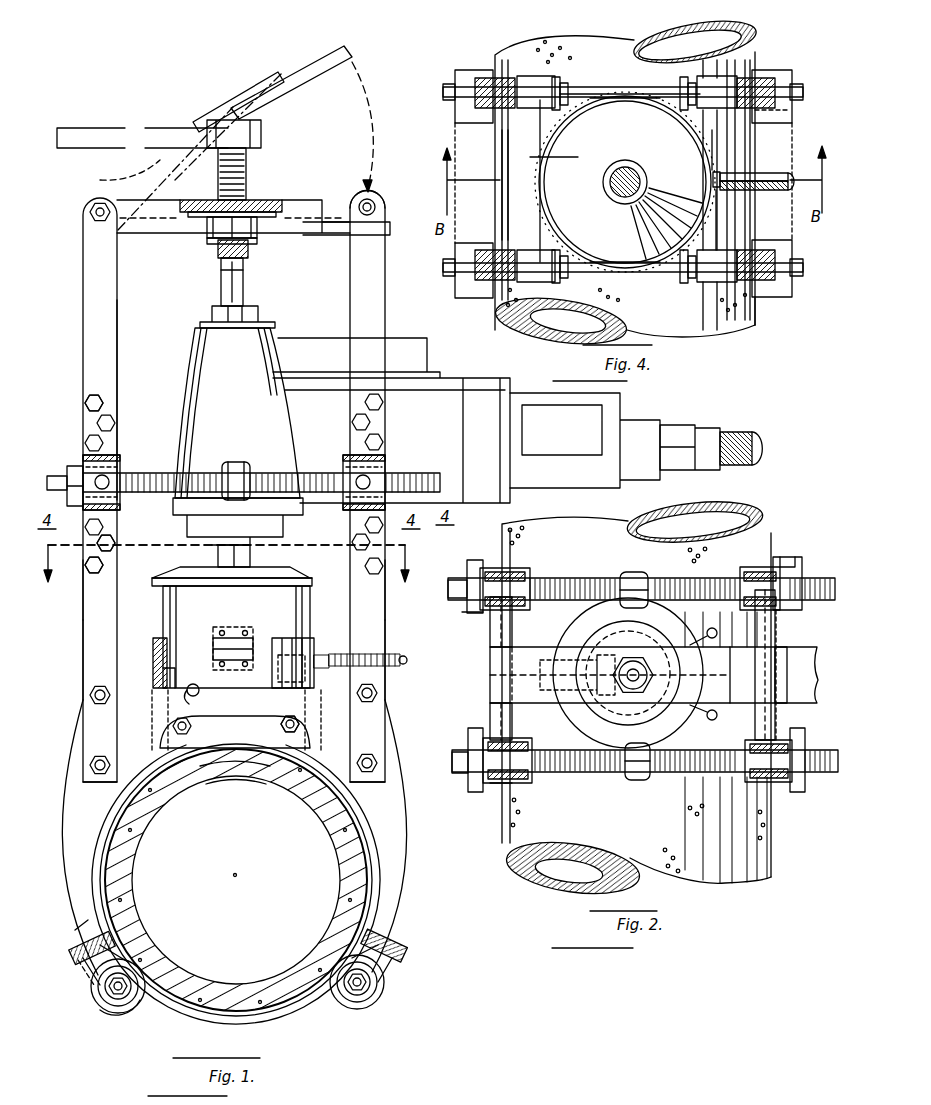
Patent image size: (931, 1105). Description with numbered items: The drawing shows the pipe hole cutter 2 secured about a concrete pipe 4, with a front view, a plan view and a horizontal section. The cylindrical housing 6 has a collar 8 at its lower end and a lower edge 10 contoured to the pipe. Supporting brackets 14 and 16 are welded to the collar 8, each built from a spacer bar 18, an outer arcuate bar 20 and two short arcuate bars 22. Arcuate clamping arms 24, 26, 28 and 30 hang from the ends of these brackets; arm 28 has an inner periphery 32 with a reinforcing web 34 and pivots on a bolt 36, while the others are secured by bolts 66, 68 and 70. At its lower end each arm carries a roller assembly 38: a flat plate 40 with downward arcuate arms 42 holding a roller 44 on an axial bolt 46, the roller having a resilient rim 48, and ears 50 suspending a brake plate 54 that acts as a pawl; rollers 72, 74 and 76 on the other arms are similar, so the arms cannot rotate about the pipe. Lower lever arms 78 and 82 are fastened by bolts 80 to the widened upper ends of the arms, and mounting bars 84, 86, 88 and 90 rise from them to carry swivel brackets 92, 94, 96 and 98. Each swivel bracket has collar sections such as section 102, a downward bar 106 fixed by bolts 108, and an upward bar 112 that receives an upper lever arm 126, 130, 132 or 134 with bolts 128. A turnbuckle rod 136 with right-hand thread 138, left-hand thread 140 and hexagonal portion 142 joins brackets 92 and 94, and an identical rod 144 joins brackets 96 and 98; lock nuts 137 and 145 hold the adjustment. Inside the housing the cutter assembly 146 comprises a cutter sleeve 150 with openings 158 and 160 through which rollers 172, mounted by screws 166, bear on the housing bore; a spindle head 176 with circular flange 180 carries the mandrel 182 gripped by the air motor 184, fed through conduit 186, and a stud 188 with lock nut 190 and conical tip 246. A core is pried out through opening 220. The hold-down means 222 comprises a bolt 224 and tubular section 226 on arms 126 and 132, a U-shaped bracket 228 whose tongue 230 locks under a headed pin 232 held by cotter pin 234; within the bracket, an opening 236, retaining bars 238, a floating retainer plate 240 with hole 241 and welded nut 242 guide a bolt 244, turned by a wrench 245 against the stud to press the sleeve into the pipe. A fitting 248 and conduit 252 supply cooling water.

In FIG. 1, the pipe hole cutter 2 is at (68, 314).
In FIG. 4, the pipe hole cutter 2 is at (450, 77).
In FIG. 2, the pipe hole cutter 2 is at (808, 554).
In FIG. 1, the pipe 4 is at (289, 1000).
In FIG. 4, the pipe 4 is at (751, 60).
In FIG. 2, the pipe 4 is at (773, 850).
In FIG. 1, the cylindrical housing 6 is at (153, 646).
In FIG. 4, the cylindrical housing 6 is at (540, 256).
In FIG. 1, the collar 8 is at (318, 714).
In FIG. 4, the collar 8 is at (540, 194).
In FIG. 1, the lower edge 10 is at (311, 749).
In FIG. 4, the supporting bracket 14 is at (592, 82).
In FIG. 4, the supporting bracket 16 is at (643, 284).
In FIG. 1, the spacer bar 18 is at (250, 766).
In FIG. 4, the spacer bar 18 is at (642, 92).
In FIG. 1, the arcuate bar 20 is at (236, 764).
In FIG. 4, the arcuate bar 20 is at (608, 94).
In FIG. 4, the short arcuate bars 22 is at (668, 113).
In FIG. 4, the arcuate clamping arm 24 is at (522, 85).
In FIG. 4, the arcuate clamping arm 26 is at (715, 111).
In FIG. 1, the arcuate clamping arm 28 is at (63, 782).
In FIG. 4, the arcuate clamping arm 28 is at (512, 258).
In FIG. 1, the arcuate clamping arm 30 is at (400, 758).
In FIG. 4, the arcuate clamping arm 30 is at (716, 248).
In FIG. 1, the arcuate inner periphery 32 is at (95, 846).
In FIG. 1, the arcuate reinforcing web 34 is at (95, 887).
In FIG. 1, the bolt 36 is at (166, 724).
In FIG. 4, the bolt 36 is at (561, 282).
In FIG. 1, the roller assembly 38 is at (110, 1022).
In FIG. 1, the flat plate 40 is at (80, 936).
In FIG. 1, the arcuate arms 42 is at (108, 986).
In FIG. 1, the roller 44 is at (142, 998).
In FIG. 4, the roller 44 is at (472, 245).
In FIG. 1, the axial bolt 46 is at (114, 994).
In FIG. 1, the rim 48 is at (125, 1014).
In FIG. 1, the ears 50 is at (76, 950).
In FIG. 1, the brake plate 54 is at (86, 972).
In FIG. 4, the bolt 66 is at (560, 80).
In FIG. 4, the bolt 68 is at (684, 84).
In FIG. 1, the bolt 70 is at (301, 726).
In FIG. 4, the bolt 70 is at (688, 291).
In FIG. 4, the roller 72 is at (466, 70).
In FIG. 4, the roller 74 is at (790, 68).
In FIG. 1, the roller 76 is at (384, 992).
In FIG. 4, the roller 76 is at (780, 297).
In FIG. 1, the lower lever arms 78 is at (83, 627).
In FIG. 1, the bolts 80 is at (101, 698).
In FIG. 1, the lower lever arms 82 is at (386, 624).
In FIG. 1, the mounting bar 84 is at (83, 586).
In FIG. 4, the mounting bar 84 is at (486, 292).
In FIG. 1, the mounting bar 86 is at (385, 590).
In FIG. 4, the mounting bar 86 is at (758, 300).
In FIG. 4, the mounting bar 88 is at (509, 122).
In FIG. 4, the mounting bar 90 is at (762, 120).
In FIG. 1, the swivel bracket 92 is at (78, 463).
In FIG. 2, the swivel bracket 92 is at (522, 784).
In FIG. 1, the swivel bracket 94 is at (389, 464).
In FIG. 2, the swivel bracket 94 is at (752, 785).
In FIG. 2, the swivel bracket 96 is at (520, 570).
In FIG. 2, the swivel bracket 98 is at (745, 570).
In FIG. 1, the semi-cylindrical collar section 102 is at (118, 512).
In FIG. 1, the downwardly directed bar 106 is at (118, 560).
In FIG. 1, the bolts 108 is at (107, 572).
In FIG. 1, the upwardly projecting bar 112 is at (118, 412).
In FIG. 1, the upper lever arm 126 is at (118, 292).
In FIG. 2, the upper lever arm 126 is at (512, 745).
In FIG. 1, the bolts 128 is at (97, 394).
In FIG. 1, the upper lever arm 130 is at (386, 290).
In FIG. 2, the upper lever arm 130 is at (755, 770).
In FIG. 2, the upper lever arm 132 is at (470, 566).
In FIG. 2, the upper lever arm 134 is at (782, 560).
In FIG. 1, the turnbuckle rod 136 is at (253, 470).
In FIG. 2, the turnbuckle rod 136 is at (617, 780).
In FIG. 1, the lock nut 137 is at (66, 506).
In FIG. 2, the lock nut 137 is at (462, 782).
In FIG. 1, the right-hand thread 138 is at (155, 472).
In FIG. 2, the right-hand thread 138 is at (565, 773).
In FIG. 1, the left-hand thread 140 is at (322, 472).
In FIG. 2, the left-hand thread 140 is at (695, 774).
In FIG. 1, the hexagonal-shaped portion 142 is at (236, 462).
In FIG. 2, the hexagonal-shaped portion 142 is at (640, 781).
In FIG. 2, the turnbuckle rod 144 is at (625, 573).
In FIG. 2, the lock nut 145 is at (470, 608).
In FIG. 1, the cutter assembly 146 is at (306, 558).
In FIG. 4, the cutter assembly 146 is at (700, 200).
In FIG. 2, the cutter assembly 146 is at (668, 580).
In FIG. 1, the cutter sleeve 150 is at (310, 598).
In FIG. 1, the rectangular openings 158 is at (196, 688).
In FIG. 1, the rectangular openings 160 is at (256, 646).
In FIG. 1, the screws 166 is at (222, 628).
In FIG. 1, the roller 172 is at (213, 648).
In FIG. 1, the spindle head 176 is at (208, 566).
In FIG. 4, the spindle head 176 is at (570, 158).
In FIG. 1, the circular flange 180 is at (166, 578).
In FIG. 1, the mandrel 182 is at (250, 556).
In FIG. 4, the mandrel 182 is at (641, 174).
In FIG. 1, the air-driven motor 184 is at (192, 354).
In FIG. 2, the air-driven motor 184 is at (617, 625).
In FIG. 1, the conduit 186 is at (735, 430).
In FIG. 1, the stud 188 is at (244, 290).
In FIG. 1, the lock nut 190 is at (258, 314).
In FIG. 1, the circular opening 220 is at (201, 692).
In FIG. 1, the hold-down means 222 is at (232, 84).
In FIG. 1, the bolt 224 is at (90, 212).
In FIG. 2, the bolt 224 is at (497, 790).
In FIG. 2, the tubular section 226 is at (490, 628).
In FIG. 1, the U-shaped bracket 228 is at (232, 107).
In FIG. 2, the U-shaped bracket 228 is at (536, 650).
In FIG. 1, the tongue 230 is at (342, 52).
In FIG. 2, the tongue 230 is at (810, 675).
In FIG. 1, the headed pin 232 is at (359, 203).
In FIG. 2, the headed pin 232 is at (718, 636).
In FIG. 1, the cotter pin 234 is at (372, 198).
In FIG. 2, the cotter pin 234 is at (797, 790).
In FIG. 1, the circular opening 236 is at (250, 200).
In FIG. 1, the retaining bars 238 is at (207, 228).
In FIG. 2, the retaining bars 238 is at (590, 665).
In FIG. 1, the retainer plate 240 is at (220, 252).
In FIG. 2, the retainer plate 240 is at (630, 697).
In FIG. 1, the hole 241 is at (118, 180).
In FIG. 1, the nut 242 is at (246, 250).
In FIG. 1, the bolt 244 is at (246, 178).
In FIG. 2, the bolt 244 is at (640, 660).
In FIG. 1, the wrench 245 is at (88, 128).
In FIG. 2, the wrench 245 is at (500, 681).
In FIG. 1, the conical tip 246 is at (223, 278).
In FIG. 1, the fitting 248 is at (313, 650).
In FIG. 4, the fitting 248 is at (717, 175).
In FIG. 1, the conduit 252 is at (398, 672).
In FIG. 4, the conduit 252 is at (766, 172).